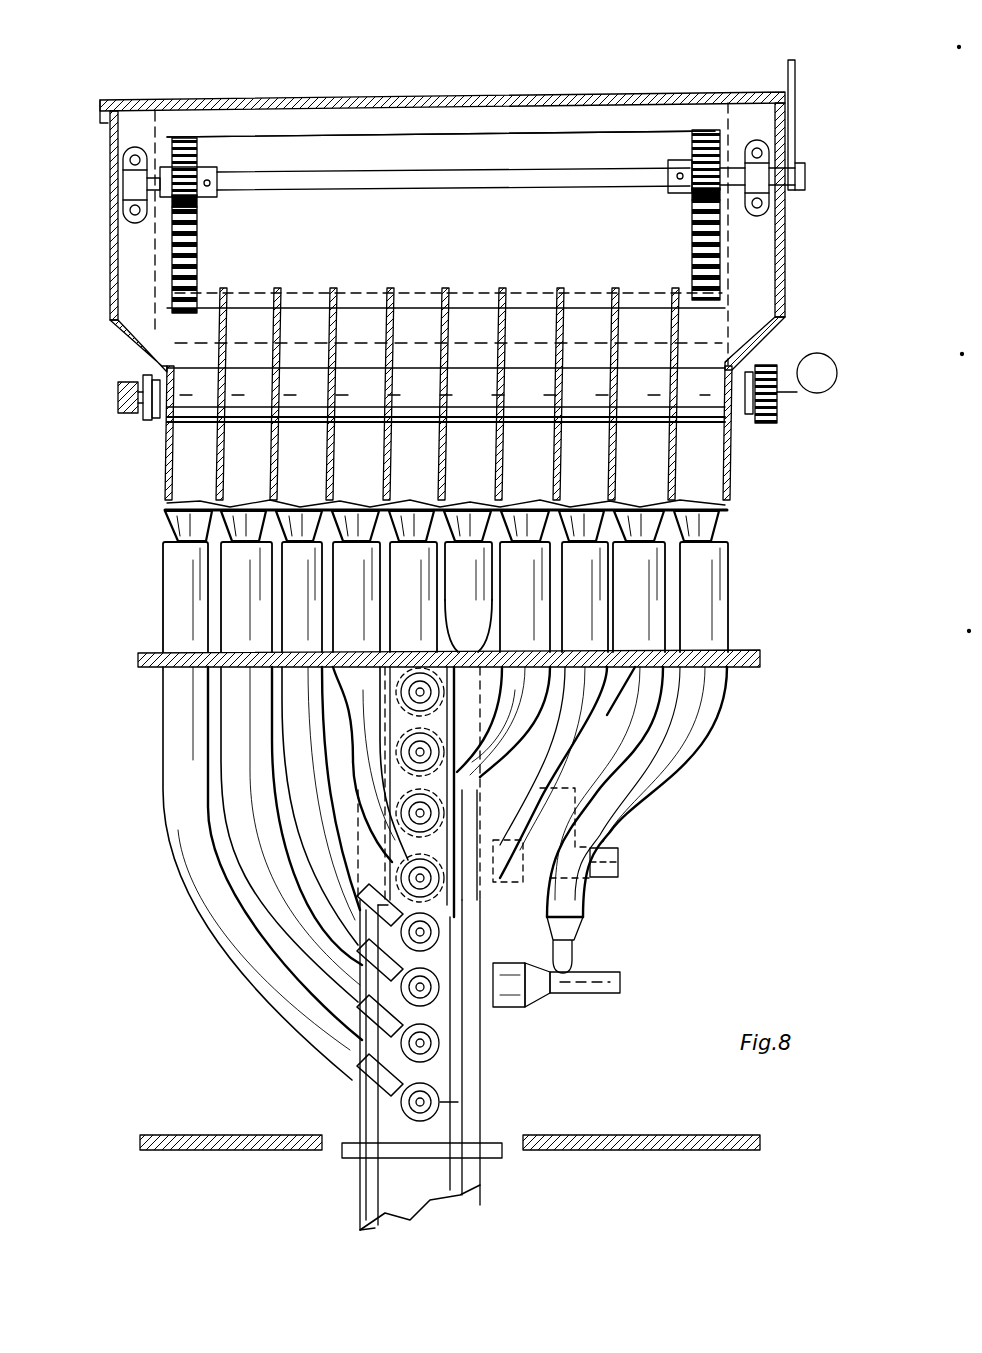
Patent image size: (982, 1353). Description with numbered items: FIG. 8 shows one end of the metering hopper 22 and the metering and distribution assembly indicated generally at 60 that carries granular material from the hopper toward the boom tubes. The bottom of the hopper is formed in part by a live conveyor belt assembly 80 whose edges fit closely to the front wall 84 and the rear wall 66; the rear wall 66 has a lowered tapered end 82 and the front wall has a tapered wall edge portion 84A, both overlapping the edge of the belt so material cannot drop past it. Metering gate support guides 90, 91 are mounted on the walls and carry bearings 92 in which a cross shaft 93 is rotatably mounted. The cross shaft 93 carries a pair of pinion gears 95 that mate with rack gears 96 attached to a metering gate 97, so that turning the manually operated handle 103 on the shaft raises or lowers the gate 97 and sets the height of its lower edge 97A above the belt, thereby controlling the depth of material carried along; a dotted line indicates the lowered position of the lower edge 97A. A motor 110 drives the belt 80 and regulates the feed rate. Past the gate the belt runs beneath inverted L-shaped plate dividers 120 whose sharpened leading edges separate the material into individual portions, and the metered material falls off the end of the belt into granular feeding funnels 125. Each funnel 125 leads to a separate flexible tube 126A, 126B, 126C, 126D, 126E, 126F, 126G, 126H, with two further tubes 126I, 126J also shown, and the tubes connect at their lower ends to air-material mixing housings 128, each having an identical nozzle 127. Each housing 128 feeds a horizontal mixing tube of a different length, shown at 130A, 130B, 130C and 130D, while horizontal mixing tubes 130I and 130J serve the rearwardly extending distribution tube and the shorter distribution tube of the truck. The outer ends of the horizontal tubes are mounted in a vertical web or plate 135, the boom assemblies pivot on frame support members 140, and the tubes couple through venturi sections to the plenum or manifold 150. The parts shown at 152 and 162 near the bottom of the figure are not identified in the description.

The hopper 22 is at (612, 80).
The dispensing assembly 60 is at (350, 122).
The metering gate 97 is at (437, 150).
The lower edge of metering gate 97A is at (350, 338).
The manually operated handle 103 is at (793, 60).
The front wall 84 is at (110, 262).
The tapered wall edge portion 84A is at (140, 345).
The metering gate support guide 91 is at (128, 118).
The rear wall 66 is at (786, 228).
The lowered tapered end 82 is at (770, 335).
The metering gate support guide 90 is at (755, 124).
The bearings 92 is at (130, 180).
The cross shaft 93 is at (470, 178).
The pinion gears 95 is at (182, 140).
The rack gears 96 is at (197, 225).
The inverted L-shaped plate divider 120 is at (493, 285).
The live conveyor belt assembly 80 is at (152, 420).
The motor 110 is at (813, 393).
The granular feeding funnel 125 is at (580, 520).
The flexible tube 126A is at (180, 692).
The flexible tube 126B is at (240, 748).
The flexible tube 126C is at (296, 800).
The flexible tube 126D is at (485, 885).
The flexible tube 126E is at (360, 625).
The flexible tube 126F is at (542, 596).
The flexible tube 126G is at (486, 596).
The flexible tube 126H is at (430, 596).
The tube I 126I is at (645, 568).
The tube J 126J is at (710, 602).
The frame support members 140 is at (738, 668).
The nozzle 127 is at (430, 820).
The horizontal mixing tube 130A is at (440, 1092).
The horizontal mixing tube 130B is at (440, 1035).
The horizontal mixing tube 130C is at (440, 978).
The horizontal mixing tube 130D is at (380, 912).
The horizontal mixing tube 130I is at (618, 865).
The horizontal mixing tube 130J is at (620, 982).
The air-material mixing housing 128 is at (462, 1102).
The vertical web 135 is at (448, 828).
The plenum or manifold 150 is at (458, 1048).
The support column 152 is at (362, 1190).
The flange 162 is at (478, 1168).